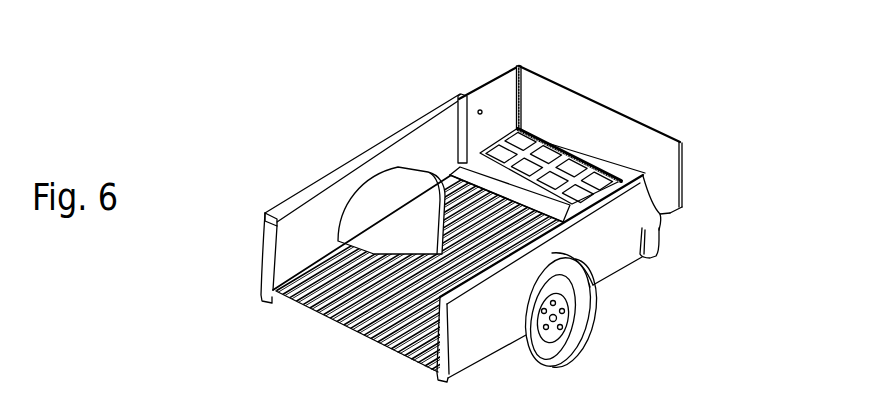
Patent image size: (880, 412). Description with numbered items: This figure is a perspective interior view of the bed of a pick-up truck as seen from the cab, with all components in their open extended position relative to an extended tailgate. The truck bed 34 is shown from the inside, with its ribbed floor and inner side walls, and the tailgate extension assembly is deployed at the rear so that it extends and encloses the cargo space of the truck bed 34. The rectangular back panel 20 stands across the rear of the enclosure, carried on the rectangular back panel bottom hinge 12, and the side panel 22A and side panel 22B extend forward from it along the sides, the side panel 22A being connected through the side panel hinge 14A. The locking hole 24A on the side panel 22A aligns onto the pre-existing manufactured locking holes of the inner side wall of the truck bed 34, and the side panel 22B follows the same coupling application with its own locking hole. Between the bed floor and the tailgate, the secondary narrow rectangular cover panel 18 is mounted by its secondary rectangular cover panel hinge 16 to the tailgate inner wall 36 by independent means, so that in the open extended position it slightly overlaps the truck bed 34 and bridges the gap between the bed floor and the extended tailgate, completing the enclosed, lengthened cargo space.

The rectangular back panel bottom hinge 12 is at (627, 178).
The side panel hinge 14A is at (519, 82).
The secondary rectangular cover panel hinge 16 is at (537, 192).
The secondary narrow rectangular cover panel 18 is at (528, 192).
The rectangular back panel 20 is at (582, 122).
The side panel 22A is at (493, 98).
The side panel 22B is at (662, 177).
The locking hole 24A is at (468, 107).
The truck bed 34 is at (408, 282).
The tailgate inner wall 36 is at (553, 160).